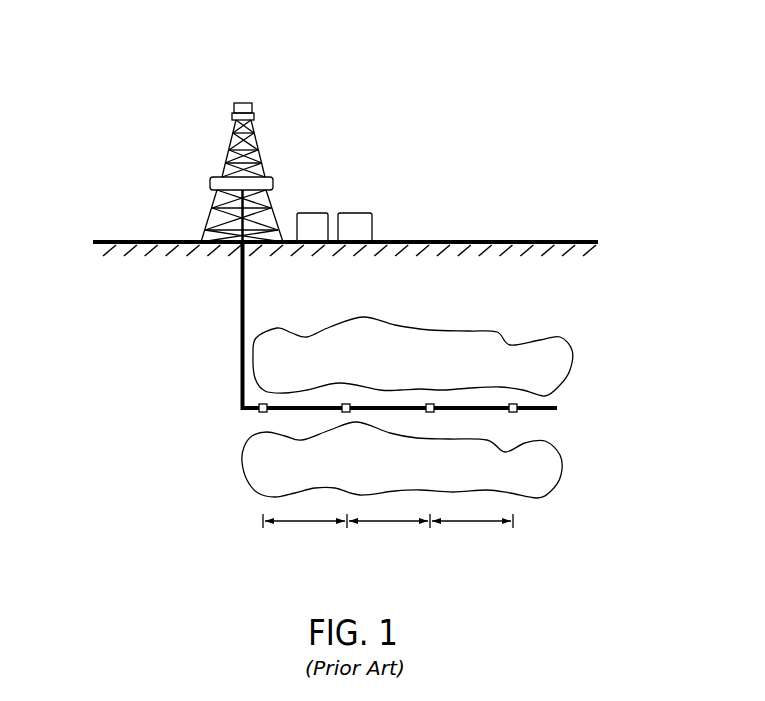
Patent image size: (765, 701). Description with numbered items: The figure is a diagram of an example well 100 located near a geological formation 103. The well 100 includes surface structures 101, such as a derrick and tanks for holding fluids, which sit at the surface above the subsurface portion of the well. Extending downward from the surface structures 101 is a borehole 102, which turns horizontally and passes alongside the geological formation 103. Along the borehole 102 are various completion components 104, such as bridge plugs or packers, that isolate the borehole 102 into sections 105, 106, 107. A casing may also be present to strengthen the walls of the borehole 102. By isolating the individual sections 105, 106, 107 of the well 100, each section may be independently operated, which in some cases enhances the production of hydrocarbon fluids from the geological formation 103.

The well 100 is at (147, 92).
The surface structures 101 is at (310, 162).
The borehole 102 is at (240, 313).
The geological formation 103 is at (561, 450).
The completion components 104 is at (437, 414).
The section 105 is at (471, 532).
The section 106 is at (387, 531).
The section 107 is at (304, 531).